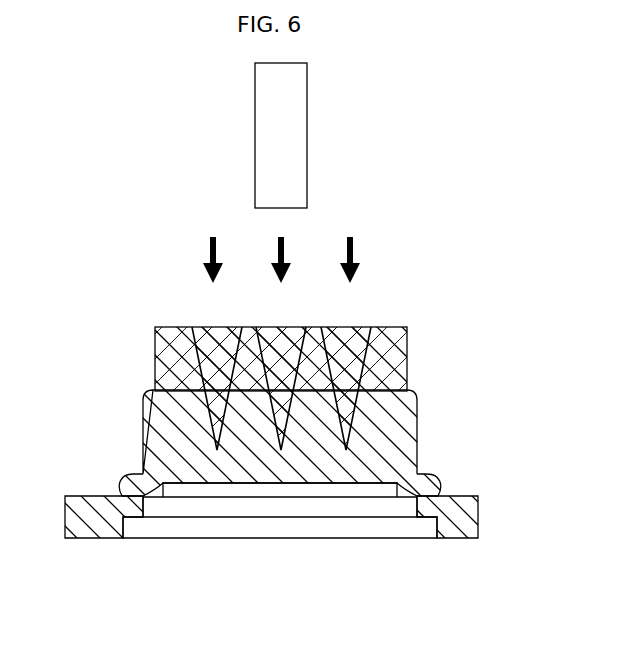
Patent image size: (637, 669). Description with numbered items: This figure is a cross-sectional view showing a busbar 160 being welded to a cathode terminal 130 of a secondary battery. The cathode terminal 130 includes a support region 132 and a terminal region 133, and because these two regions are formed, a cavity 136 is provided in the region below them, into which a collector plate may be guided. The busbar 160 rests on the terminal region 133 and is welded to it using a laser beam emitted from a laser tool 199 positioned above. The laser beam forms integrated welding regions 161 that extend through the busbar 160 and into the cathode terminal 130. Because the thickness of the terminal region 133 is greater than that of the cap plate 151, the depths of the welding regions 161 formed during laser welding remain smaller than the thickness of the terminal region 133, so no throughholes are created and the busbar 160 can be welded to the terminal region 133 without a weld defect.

The laser tool 199 is at (297, 127).
The welding regions 161 is at (360, 327).
The busbar 160 is at (402, 347).
The terminal region 133 is at (403, 417).
The support region 132 is at (433, 477).
The cathode terminal 130 is at (318, 460).
The cap plate 151 is at (95, 540).
The cavity 136 is at (278, 528).